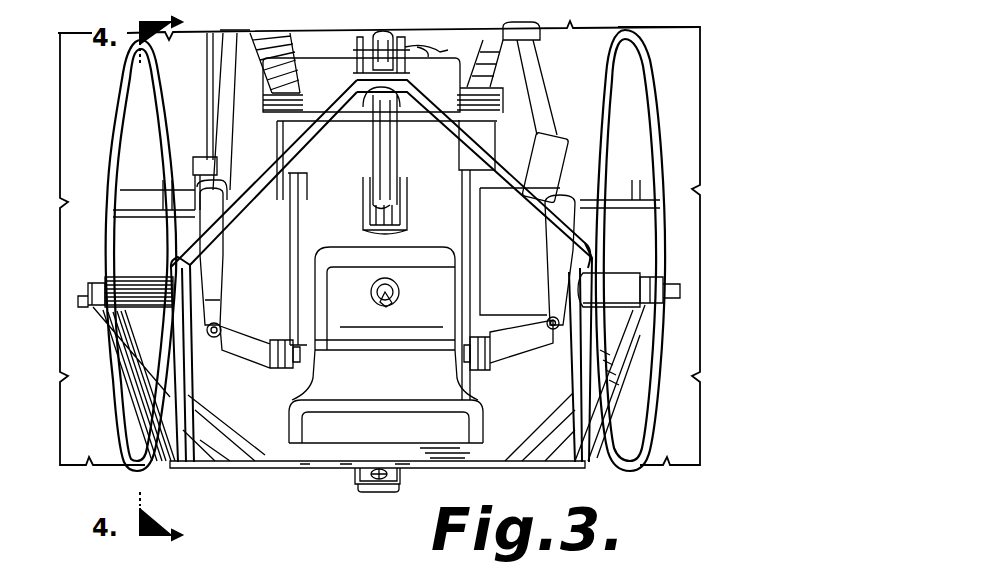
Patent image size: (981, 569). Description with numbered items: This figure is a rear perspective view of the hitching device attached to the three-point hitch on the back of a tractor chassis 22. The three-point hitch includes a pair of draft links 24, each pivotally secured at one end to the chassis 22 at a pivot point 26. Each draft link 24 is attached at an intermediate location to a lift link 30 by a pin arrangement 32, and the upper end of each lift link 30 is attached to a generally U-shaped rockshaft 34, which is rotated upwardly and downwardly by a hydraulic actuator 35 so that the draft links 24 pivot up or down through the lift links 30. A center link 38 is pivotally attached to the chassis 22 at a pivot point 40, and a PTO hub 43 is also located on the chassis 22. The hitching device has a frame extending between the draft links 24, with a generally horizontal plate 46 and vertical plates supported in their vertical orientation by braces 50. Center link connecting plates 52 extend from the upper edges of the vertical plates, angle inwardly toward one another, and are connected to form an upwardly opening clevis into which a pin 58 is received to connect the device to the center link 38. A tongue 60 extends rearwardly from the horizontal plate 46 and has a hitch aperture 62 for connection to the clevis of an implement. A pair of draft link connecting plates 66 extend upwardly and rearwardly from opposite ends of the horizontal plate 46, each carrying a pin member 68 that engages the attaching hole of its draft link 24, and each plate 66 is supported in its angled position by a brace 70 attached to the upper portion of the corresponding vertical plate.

The chassis 22 is at (515, 263).
The draft links 24 is at (247, 328).
The pivot point 26 is at (290, 364).
The lift link 30 is at (215, 95).
The pin arrangement 32 is at (220, 338).
The rockshaft 34 is at (274, 100).
The hydraulic actuator 35 is at (207, 62).
The center link 38 is at (383, 151).
The pivot point 40 is at (395, 216).
The PTO hub 43 is at (374, 298).
The horizontal plate 46 is at (485, 466).
The braces 50 is at (216, 466).
The center link connecting plates 52 is at (288, 162).
The pin 58 is at (400, 58).
The tongue 60 is at (357, 486).
The hitch aperture 62 is at (384, 492).
The draft link connecting plates 66 is at (127, 380).
The pin member 68 is at (80, 300).
The brace 70 is at (152, 278).